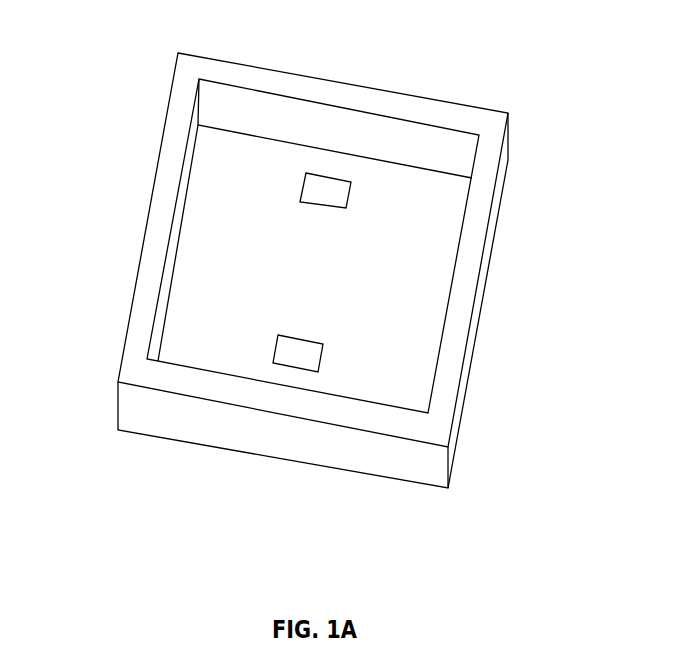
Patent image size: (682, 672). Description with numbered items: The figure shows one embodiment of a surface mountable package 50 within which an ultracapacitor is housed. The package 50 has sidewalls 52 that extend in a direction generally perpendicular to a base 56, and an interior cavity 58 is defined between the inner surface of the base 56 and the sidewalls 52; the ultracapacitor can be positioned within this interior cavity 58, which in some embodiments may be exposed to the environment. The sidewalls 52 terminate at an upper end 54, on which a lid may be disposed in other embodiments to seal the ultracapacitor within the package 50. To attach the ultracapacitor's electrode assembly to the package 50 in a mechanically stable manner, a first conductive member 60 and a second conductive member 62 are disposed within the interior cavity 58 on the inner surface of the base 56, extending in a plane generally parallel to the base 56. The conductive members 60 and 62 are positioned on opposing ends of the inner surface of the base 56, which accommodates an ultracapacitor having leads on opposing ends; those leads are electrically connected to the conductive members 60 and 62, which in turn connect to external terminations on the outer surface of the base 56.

The package 50 is at (315, 271).
The sidewalls 52 is at (403, 94).
The upper end 54 is at (418, 428).
The base 56 is at (325, 315).
The interior cavity 58 is at (422, 245).
The first conductive member 60 is at (332, 192).
The second conductive member 62 is at (298, 352).